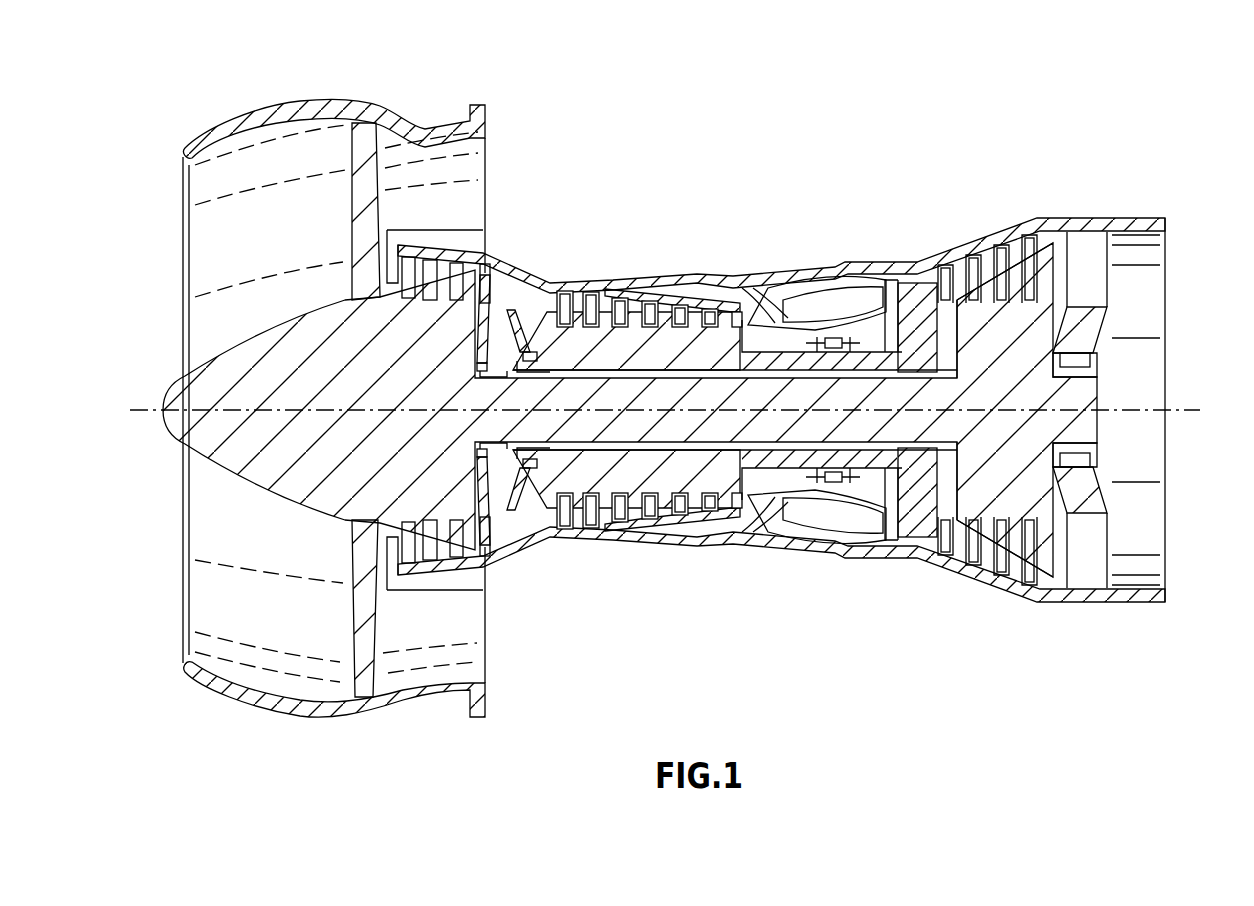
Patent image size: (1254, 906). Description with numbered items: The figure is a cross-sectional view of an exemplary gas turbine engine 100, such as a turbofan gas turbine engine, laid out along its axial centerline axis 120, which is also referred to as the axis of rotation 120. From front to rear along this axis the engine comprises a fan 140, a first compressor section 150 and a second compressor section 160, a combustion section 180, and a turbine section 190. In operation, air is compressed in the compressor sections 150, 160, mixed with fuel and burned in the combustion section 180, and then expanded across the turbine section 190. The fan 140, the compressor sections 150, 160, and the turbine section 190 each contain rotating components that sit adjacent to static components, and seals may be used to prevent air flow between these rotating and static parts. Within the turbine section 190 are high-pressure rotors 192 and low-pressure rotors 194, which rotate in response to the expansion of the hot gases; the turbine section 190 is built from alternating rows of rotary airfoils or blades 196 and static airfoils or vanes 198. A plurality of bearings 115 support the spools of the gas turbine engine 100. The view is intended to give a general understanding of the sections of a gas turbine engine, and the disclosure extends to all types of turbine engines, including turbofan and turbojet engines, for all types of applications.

The gas turbine engine 100 is at (913, 145).
The bearings 115 is at (528, 352).
The axial centerline axis 120 is at (148, 410).
The fan 140 is at (378, 190).
The compressor section 150 is at (385, 725).
The compressor section 160 is at (545, 549).
The combustion section 180 is at (762, 569).
The turbine section 190 is at (930, 614).
The high-pressure rotors 192 is at (930, 297).
The low-pressure rotors 194 is at (1043, 325).
The blades 196 is at (987, 252).
The vanes 198 is at (1003, 246).